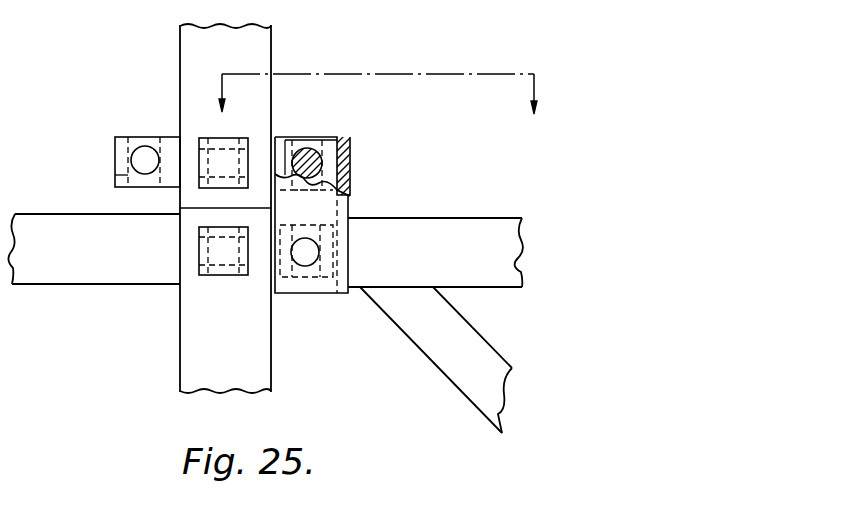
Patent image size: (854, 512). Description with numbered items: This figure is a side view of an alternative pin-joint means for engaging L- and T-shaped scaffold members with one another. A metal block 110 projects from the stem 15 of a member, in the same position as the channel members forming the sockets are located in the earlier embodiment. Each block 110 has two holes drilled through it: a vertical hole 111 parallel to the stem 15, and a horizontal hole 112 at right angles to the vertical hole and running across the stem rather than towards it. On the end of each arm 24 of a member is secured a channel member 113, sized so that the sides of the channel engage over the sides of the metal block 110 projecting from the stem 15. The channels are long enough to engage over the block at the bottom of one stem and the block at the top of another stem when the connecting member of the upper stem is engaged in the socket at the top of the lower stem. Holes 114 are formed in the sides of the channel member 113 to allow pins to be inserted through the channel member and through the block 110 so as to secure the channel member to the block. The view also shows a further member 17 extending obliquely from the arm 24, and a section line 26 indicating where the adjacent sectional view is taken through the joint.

The stem 15 is at (180, 70).
The diagonal brace member 17 is at (467, 358).
The arm 24 is at (72, 268).
The section line 26- 26 is at (378, 94).
The metal block 110 is at (138, 137).
The vertical hole 111 is at (112, 175).
The horizontal hole 112 is at (131, 160).
The channel member 113 is at (352, 156).
The hole 114 is at (306, 152).